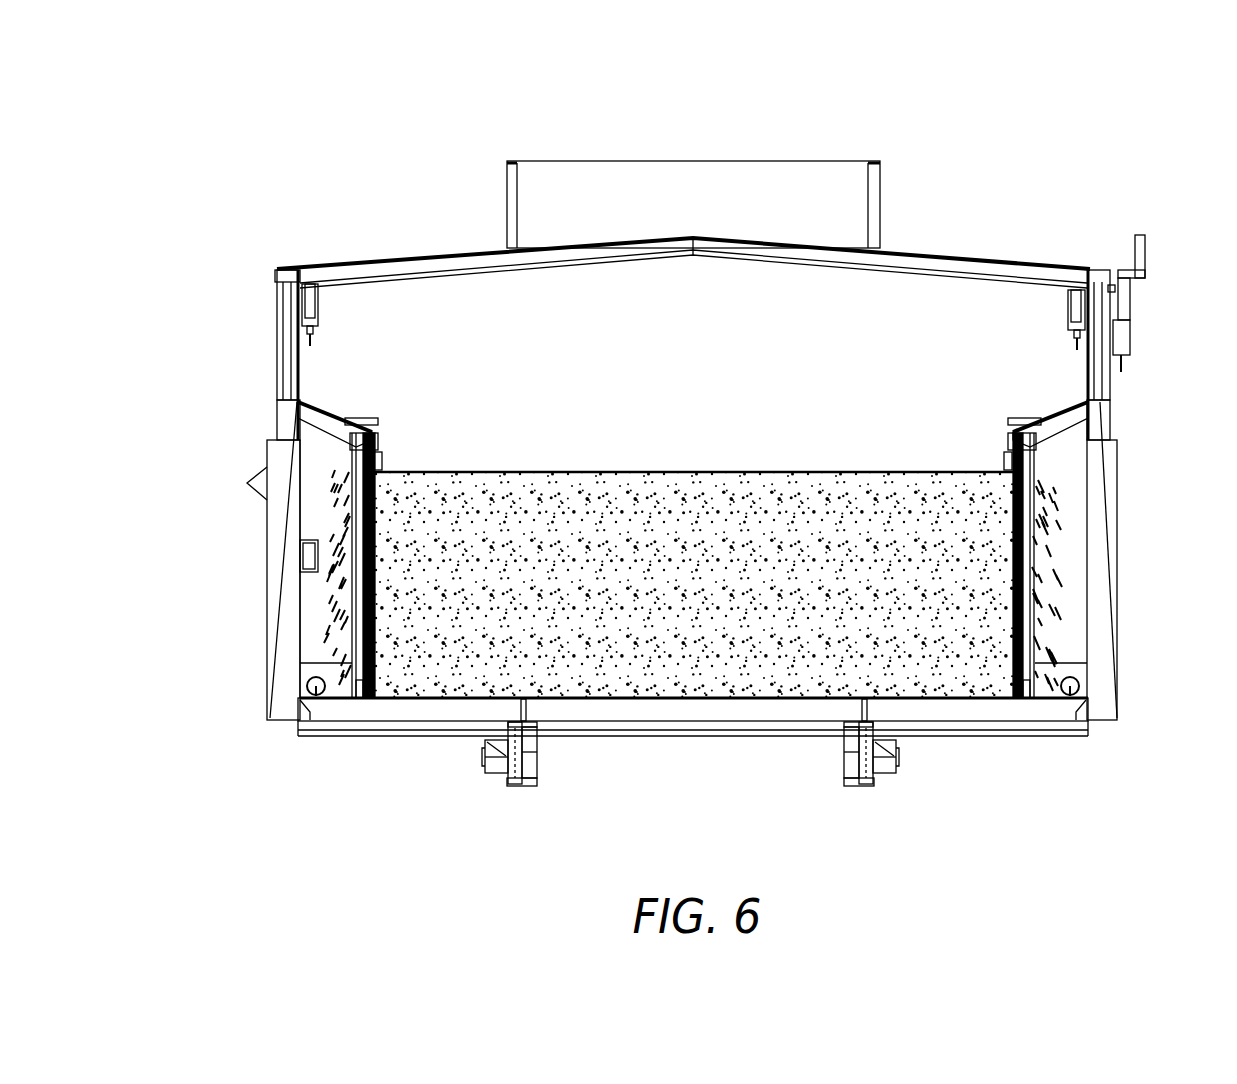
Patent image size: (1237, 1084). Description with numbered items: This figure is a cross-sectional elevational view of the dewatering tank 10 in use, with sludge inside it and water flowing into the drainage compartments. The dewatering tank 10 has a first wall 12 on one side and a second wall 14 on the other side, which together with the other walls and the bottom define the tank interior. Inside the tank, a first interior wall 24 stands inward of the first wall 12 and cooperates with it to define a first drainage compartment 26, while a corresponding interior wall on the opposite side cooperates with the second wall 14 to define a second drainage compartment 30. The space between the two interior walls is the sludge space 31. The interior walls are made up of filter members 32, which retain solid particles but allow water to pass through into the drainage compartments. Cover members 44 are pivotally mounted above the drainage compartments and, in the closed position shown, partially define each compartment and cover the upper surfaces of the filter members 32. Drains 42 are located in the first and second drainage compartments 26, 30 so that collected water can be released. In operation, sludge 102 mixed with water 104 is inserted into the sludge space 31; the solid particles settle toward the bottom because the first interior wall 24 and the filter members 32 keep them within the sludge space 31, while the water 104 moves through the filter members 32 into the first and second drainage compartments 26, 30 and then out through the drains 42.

The dewatering tank 10 is at (1173, 166).
The first wall 12 is at (287, 415).
The second wall 14 is at (1135, 387).
The first interior wall 24 is at (380, 466).
The first drainage compartment 26 is at (310, 470).
The second drainage compartment 30 is at (1078, 466).
The sludge space 31 is at (681, 438).
The filter member 32 is at (345, 500).
The drain 42 is at (316, 697).
The cover member 44 is at (328, 425).
The sludge 102 is at (707, 660).
The water 104 is at (300, 672).